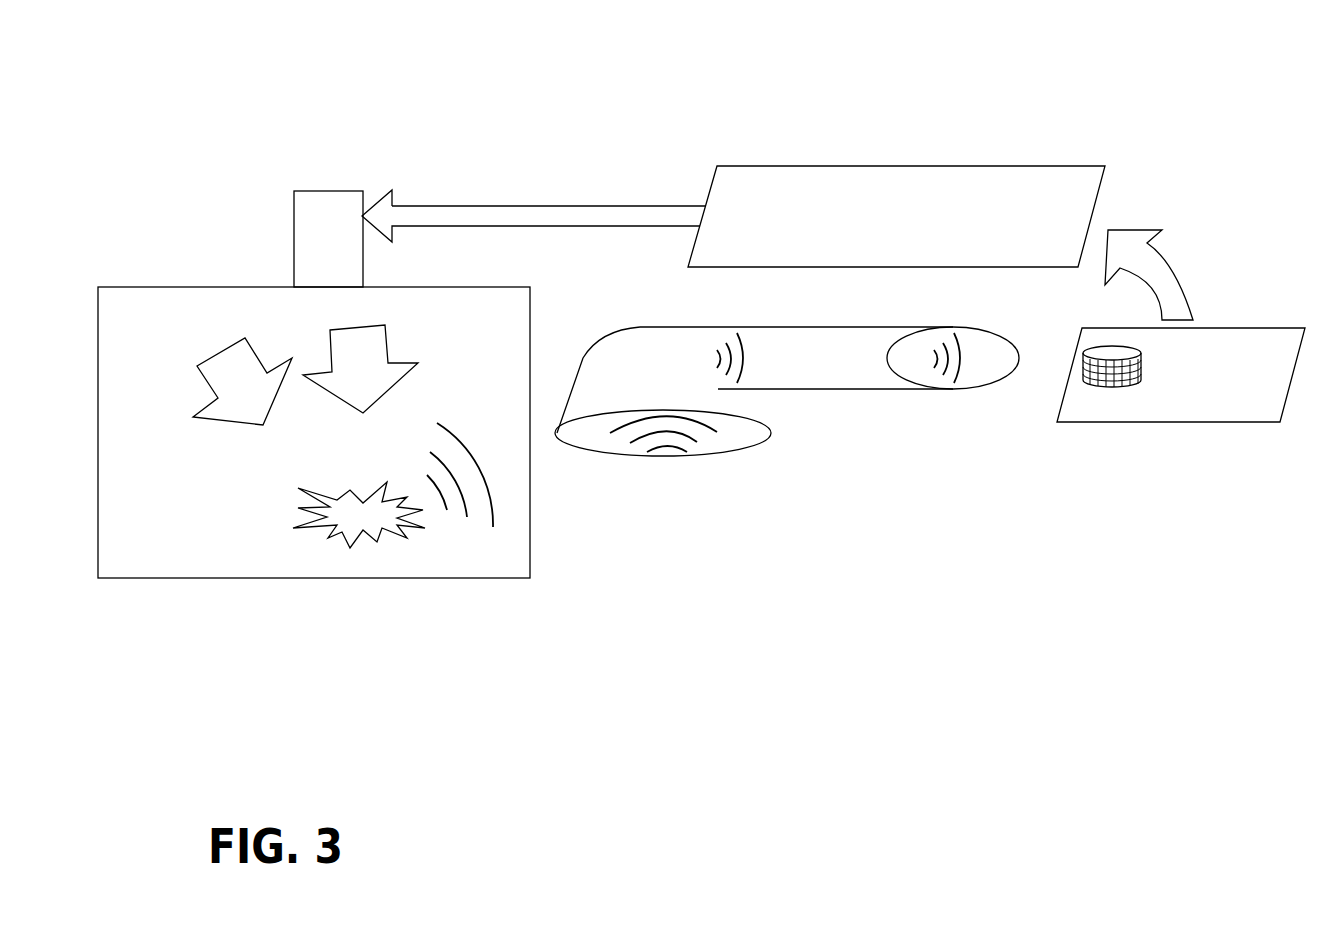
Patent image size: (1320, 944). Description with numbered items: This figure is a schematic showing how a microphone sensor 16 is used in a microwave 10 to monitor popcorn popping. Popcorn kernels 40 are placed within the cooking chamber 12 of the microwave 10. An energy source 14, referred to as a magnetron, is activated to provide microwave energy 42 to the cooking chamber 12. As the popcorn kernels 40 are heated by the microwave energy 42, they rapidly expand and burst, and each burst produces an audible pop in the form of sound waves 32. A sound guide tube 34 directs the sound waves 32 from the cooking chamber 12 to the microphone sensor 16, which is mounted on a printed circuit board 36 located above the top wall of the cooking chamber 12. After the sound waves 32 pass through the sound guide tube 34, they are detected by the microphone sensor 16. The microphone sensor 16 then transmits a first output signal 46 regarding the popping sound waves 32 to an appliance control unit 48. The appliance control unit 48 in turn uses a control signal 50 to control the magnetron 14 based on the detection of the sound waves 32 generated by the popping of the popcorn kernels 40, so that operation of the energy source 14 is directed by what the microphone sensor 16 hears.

The microwave 10 is at (1004, 111).
The cooking chamber 12 is at (157, 540).
The energy source 14 is at (303, 215).
The microphone sensor 16 is at (1122, 388).
The sound waves 32 is at (493, 505).
The sound guide tube 34 is at (827, 373).
The printed circuit board 36 is at (1232, 353).
The popcorn kernels 40 is at (382, 528).
The microwave energy 42 is at (255, 360).
The first output signal 46 is at (1167, 275).
The appliance control unit 48 is at (842, 193).
The control signal 50 is at (438, 212).